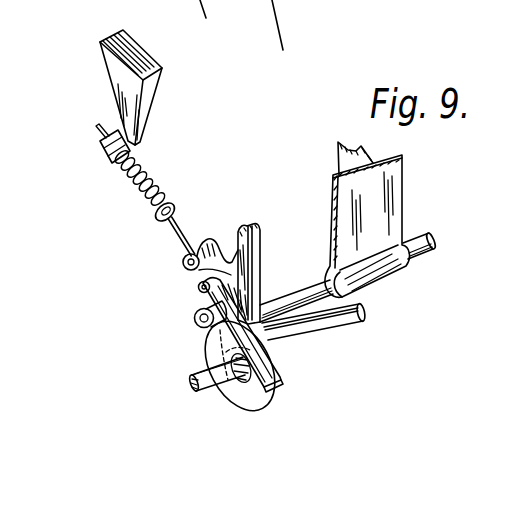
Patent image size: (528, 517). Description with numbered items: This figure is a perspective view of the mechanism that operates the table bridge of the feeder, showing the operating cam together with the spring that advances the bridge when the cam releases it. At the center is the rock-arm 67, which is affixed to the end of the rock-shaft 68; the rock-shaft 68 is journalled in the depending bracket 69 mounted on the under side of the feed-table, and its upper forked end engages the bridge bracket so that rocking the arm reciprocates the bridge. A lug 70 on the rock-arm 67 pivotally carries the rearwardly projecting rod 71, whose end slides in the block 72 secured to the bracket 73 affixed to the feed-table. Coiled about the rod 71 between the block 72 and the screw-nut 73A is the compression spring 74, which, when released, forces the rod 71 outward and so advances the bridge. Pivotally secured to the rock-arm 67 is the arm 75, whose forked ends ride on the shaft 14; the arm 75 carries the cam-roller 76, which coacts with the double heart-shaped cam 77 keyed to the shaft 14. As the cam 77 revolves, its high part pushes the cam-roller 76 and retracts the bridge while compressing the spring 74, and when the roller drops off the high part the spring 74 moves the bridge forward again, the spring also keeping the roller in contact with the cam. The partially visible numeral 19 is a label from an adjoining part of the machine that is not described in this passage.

The shaft 14 is at (357, 318).
The frame member 19 is at (22, 3).
The rock-arm 67 is at (246, 280).
The rock-shaft 68 is at (433, 236).
The depending bracket 69 is at (393, 205).
The lug 70 is at (220, 247).
The rod 71 is at (177, 236).
The block 72 is at (107, 155).
The bracket 73 is at (144, 100).
The screw-nut 73A is at (172, 210).
The compression spring 74 is at (143, 177).
The arm 75 is at (198, 292).
The cam-roller 76 is at (195, 325).
The double heart shaped cam 77 is at (212, 357).